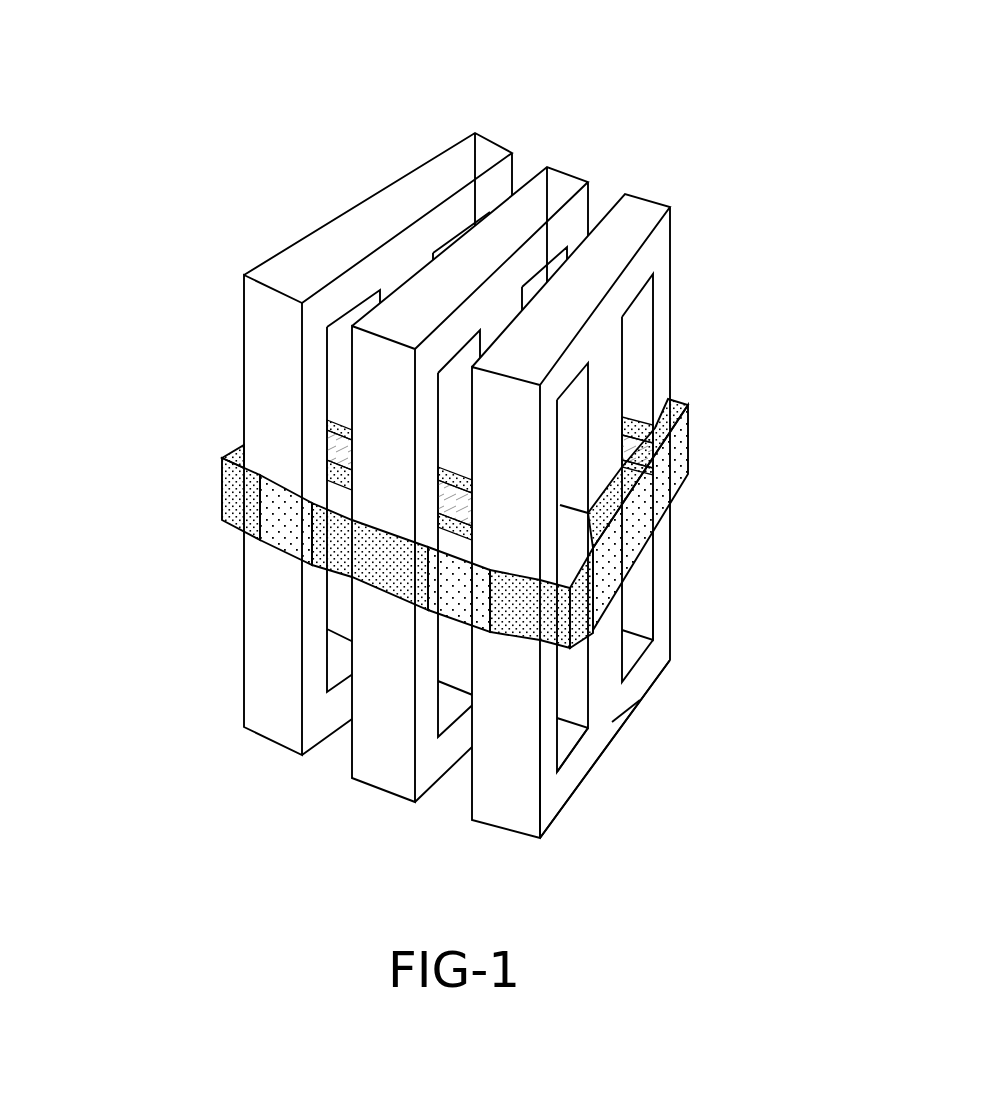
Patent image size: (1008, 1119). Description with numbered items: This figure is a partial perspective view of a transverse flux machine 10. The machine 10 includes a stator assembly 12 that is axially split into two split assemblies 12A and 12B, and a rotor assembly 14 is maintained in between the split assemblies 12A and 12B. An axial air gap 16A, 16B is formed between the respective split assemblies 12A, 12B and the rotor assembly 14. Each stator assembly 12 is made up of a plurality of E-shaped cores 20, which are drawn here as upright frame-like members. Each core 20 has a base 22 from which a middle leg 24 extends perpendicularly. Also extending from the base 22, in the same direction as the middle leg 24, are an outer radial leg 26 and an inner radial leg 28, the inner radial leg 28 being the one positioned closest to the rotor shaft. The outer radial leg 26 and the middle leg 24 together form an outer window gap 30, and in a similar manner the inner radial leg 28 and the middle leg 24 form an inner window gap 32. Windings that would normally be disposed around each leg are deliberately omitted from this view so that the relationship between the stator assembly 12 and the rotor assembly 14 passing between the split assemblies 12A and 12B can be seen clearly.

The transverse flux machine 10 is at (315, 125).
The stator assembly 12 is at (752, 280).
The split assembly 12A is at (700, 258).
The split assembly 12B is at (676, 706).
The rotor assembly 14 is at (716, 388).
The axial air gap 16A is at (213, 450).
The axial air gap 16B is at (213, 527).
The E-shaped core 20 is at (650, 190).
The base 22 is at (612, 722).
The middle leg 24 is at (612, 636).
The outer radial leg 26 is at (503, 775).
The inner radial leg 28 is at (662, 540).
The outer window gap 30 is at (572, 742).
The inner window gap 32 is at (642, 580).